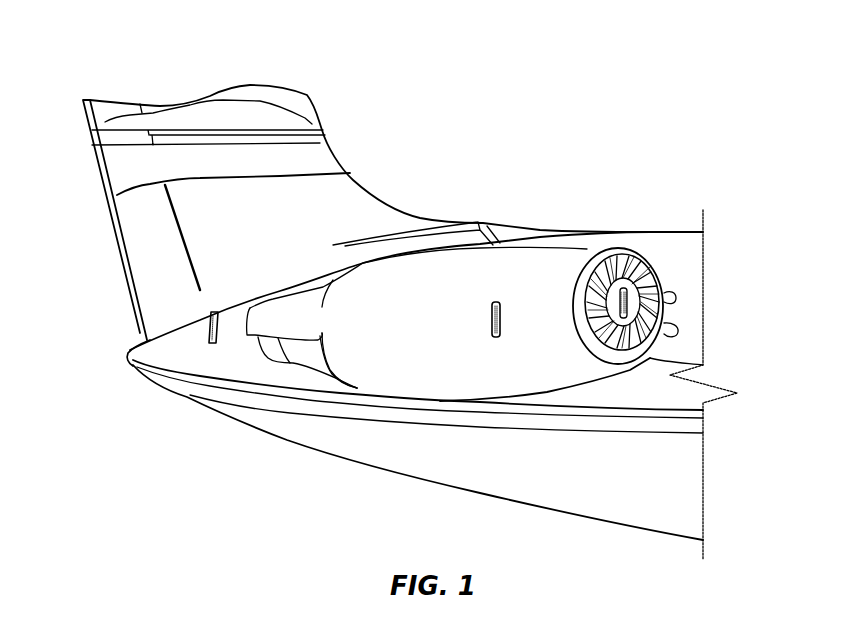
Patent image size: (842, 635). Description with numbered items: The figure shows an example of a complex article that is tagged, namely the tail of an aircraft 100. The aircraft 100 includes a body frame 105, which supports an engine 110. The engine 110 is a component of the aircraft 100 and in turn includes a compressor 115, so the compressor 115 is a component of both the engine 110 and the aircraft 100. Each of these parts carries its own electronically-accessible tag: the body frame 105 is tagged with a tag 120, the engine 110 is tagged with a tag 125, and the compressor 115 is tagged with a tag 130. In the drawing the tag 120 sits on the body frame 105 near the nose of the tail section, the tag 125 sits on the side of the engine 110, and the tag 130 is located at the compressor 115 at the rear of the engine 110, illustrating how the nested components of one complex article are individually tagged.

The aircraft 100 is at (123, 36).
The body frame 105 is at (148, 352).
The engine 110 is at (503, 267).
The compressor 115 is at (657, 268).
The electronically-accessible tag 120 is at (206, 330).
The electronically-accessible tag 125 is at (492, 318).
The electronically-accessible tag 130 is at (662, 298).